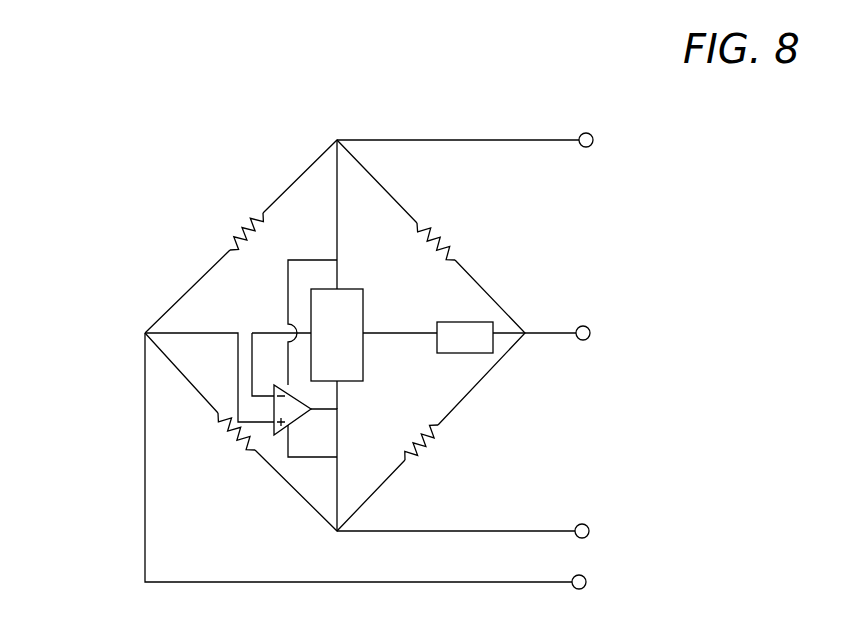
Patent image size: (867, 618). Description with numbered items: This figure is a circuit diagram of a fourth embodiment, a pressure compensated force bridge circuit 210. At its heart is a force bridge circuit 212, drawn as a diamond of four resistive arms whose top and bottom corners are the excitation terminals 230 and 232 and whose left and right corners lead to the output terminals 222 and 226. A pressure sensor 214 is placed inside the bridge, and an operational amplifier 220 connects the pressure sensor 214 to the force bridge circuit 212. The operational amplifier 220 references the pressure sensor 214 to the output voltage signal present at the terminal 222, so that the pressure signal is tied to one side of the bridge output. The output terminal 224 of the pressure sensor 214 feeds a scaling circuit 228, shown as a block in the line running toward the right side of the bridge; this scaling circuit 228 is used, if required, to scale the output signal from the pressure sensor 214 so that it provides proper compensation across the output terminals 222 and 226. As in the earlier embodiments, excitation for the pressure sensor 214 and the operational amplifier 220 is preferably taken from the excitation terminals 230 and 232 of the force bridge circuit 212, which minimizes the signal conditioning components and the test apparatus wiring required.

The pressure compensated force bridge circuit 210 is at (277, 167).
The force bridge circuit 212 is at (187, 272).
The pressure sensor 214 is at (363, 381).
The operational amplifier 220 is at (297, 416).
The output terminal 222 is at (145, 333).
The output terminal of the pressure sensor 224 is at (365, 333).
The output terminal 226 is at (497, 362).
The scaling circuit 228 is at (463, 322).
The excitation terminal 230 is at (337, 140).
The excitation terminal 232 is at (337, 531).